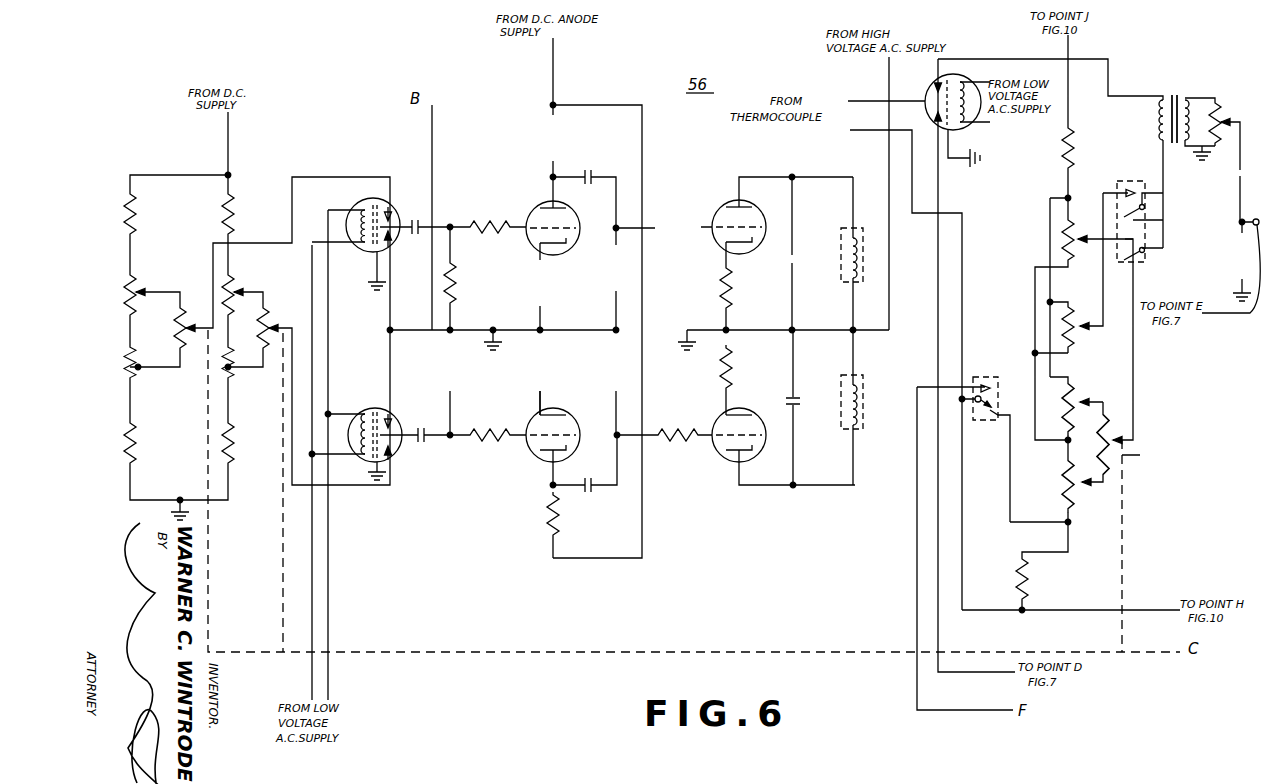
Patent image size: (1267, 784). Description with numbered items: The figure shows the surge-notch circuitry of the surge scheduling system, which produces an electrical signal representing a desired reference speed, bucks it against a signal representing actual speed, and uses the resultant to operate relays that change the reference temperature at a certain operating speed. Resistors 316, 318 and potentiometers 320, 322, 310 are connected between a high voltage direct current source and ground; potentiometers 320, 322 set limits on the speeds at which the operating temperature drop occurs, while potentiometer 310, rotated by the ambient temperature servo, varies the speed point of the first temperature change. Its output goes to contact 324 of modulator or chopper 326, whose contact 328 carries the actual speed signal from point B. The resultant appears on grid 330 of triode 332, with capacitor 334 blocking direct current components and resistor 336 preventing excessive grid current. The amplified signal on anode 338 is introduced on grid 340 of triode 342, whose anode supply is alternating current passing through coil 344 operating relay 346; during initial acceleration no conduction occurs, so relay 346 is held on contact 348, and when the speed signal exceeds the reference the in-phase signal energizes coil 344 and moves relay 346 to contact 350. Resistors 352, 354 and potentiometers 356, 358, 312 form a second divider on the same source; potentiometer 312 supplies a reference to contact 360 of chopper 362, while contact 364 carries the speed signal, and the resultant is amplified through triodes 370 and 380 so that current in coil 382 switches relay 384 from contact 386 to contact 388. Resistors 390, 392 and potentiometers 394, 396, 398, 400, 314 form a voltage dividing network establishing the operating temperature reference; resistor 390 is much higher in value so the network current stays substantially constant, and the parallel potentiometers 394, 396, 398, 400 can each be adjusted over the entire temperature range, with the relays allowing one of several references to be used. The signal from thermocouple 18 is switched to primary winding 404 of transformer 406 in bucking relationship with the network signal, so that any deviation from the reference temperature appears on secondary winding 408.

The potentiometer 310 is at (186, 352).
The potentiometer 312 is at (267, 316).
The potentiometer 314 is at (1135, 444).
The resistor 316 is at (126, 217).
The resistor 318 is at (126, 456).
The potentiometer 320 is at (118, 296).
The potentiometer 322 is at (124, 376).
The contact 324 is at (390, 215).
The modulator or chopper 326 is at (362, 206).
The contact 328 is at (390, 242).
The grid 330 is at (488, 230).
The triode 332 is at (538, 204).
The capacitor 334 is at (420, 226).
The resistor 336 is at (454, 271).
The anode 338 is at (592, 182).
The grid 340 is at (726, 244).
The triode 342 is at (730, 204).
The coil 344 is at (846, 266).
The relay 346 is at (1144, 208).
The contact 348 is at (1144, 186).
The contact 350 is at (1140, 214).
The resistor 352 is at (232, 200).
The resistor 354 is at (230, 448).
The potentiometer 356 is at (232, 285).
The potentiometer 358 is at (230, 387).
The contact 360 is at (390, 448).
The chopper 362 is at (370, 412).
The contact 364 is at (390, 427).
The triode 370 is at (527, 454).
The triode 380 is at (718, 458).
The coil 382 is at (846, 398).
The relay 384 is at (1144, 252).
The contact 386 is at (1131, 259).
The contact 388 is at (1133, 239).
The resistor 390 is at (1072, 139).
The resistor 392 is at (1026, 584).
The potentiometer 394 is at (1062, 242).
The potentiometer 396 is at (1062, 320).
The potentiometer 398 is at (1098, 376).
The potentiometer 400 is at (1066, 476).
The primary winding 404 is at (1155, 125).
The transformer 406 is at (1172, 95).
The secondary winding 408 is at (1193, 108).
The thermocouple 18 is at (895, 109).